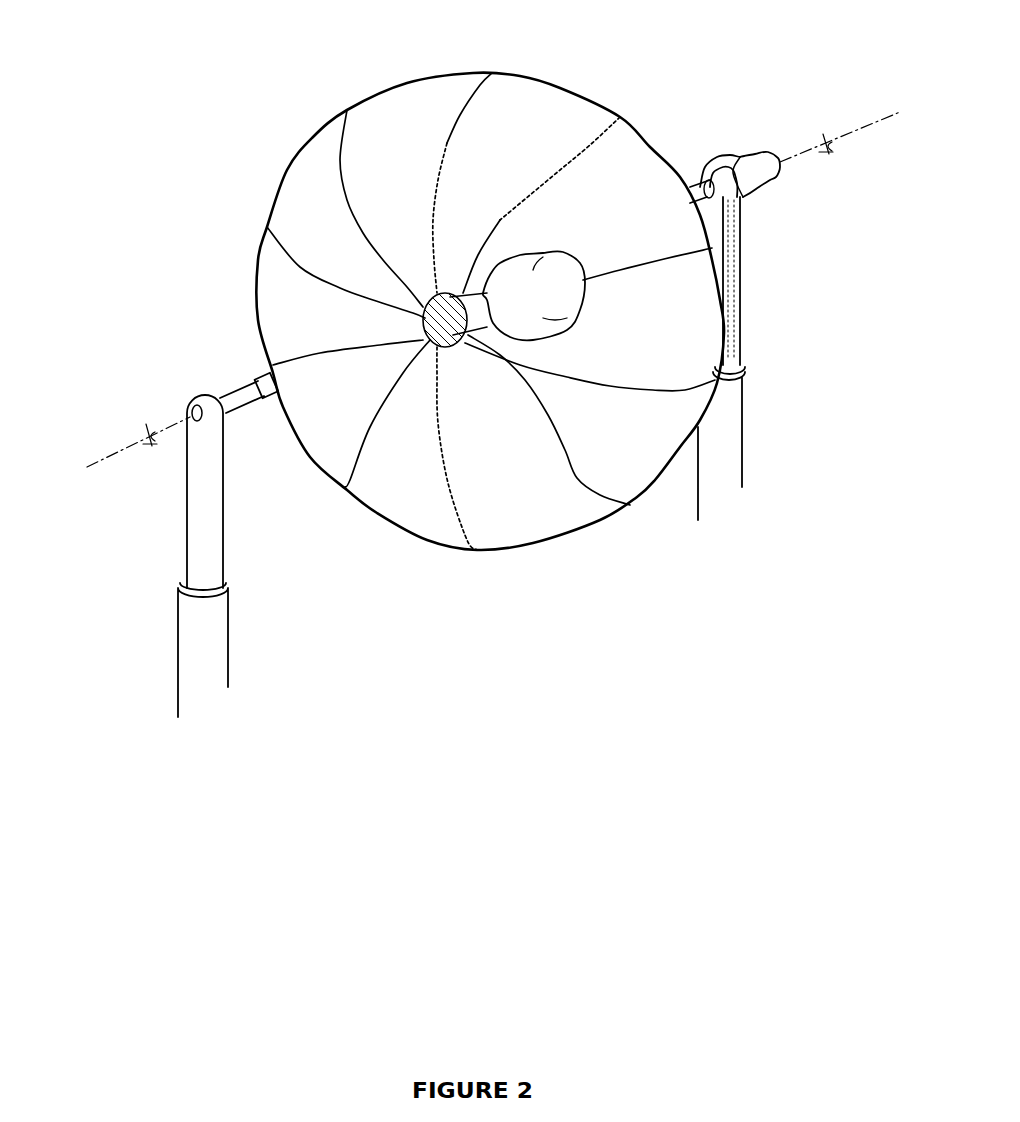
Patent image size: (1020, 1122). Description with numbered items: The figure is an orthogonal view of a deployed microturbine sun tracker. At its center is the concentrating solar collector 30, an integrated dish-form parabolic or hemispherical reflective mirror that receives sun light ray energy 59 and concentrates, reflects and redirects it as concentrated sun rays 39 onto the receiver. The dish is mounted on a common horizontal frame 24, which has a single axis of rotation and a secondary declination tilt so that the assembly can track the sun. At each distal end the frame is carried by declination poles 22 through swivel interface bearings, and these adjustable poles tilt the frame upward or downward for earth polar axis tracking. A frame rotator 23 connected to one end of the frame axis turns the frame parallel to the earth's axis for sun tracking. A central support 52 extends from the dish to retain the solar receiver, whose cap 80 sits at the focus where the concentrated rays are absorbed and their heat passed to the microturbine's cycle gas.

The declination poles 22 is at (735, 420).
The frame rotator 23 is at (760, 160).
The horizontal frame 24 is at (240, 390).
The concentrating solar collector 30 is at (560, 88).
The concentrated sun rays 39 is at (465, 278).
The central support 52 is at (468, 330).
The sun light ray energy 59 is at (627, 163).
The solar receiver cap 80 is at (576, 294).